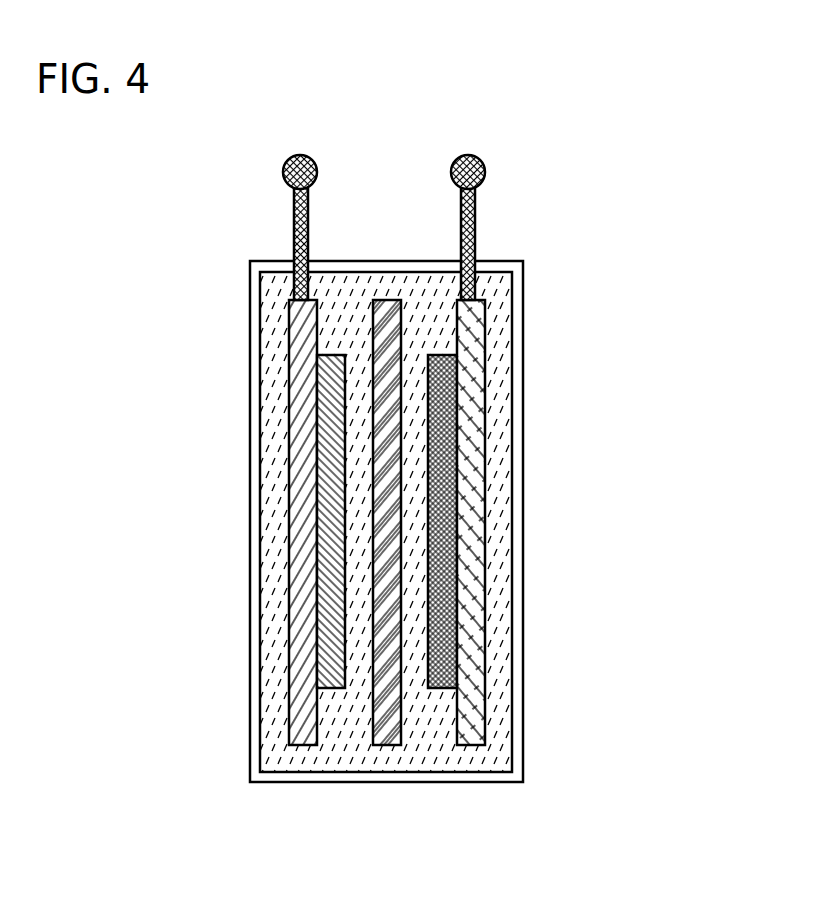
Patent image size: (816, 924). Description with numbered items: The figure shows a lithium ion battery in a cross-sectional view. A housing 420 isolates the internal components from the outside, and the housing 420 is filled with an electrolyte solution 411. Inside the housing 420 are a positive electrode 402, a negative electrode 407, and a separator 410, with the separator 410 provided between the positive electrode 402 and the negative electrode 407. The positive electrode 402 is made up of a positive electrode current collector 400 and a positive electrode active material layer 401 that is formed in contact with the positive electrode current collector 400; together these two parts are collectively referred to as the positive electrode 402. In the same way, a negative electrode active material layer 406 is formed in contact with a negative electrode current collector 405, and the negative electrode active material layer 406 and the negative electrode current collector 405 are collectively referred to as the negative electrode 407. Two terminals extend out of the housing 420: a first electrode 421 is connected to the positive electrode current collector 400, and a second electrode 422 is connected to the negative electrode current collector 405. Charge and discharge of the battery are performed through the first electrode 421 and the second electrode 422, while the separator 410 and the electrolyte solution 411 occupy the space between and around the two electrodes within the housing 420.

The positive electrode current collector 400 is at (293, 744).
The positive electrode active material layer 401 is at (325, 690).
The positive electrode 402 is at (310, 600).
The negative electrode current collector 405 is at (473, 738).
The negative electrode active material layer 406 is at (440, 690).
The negative electrode 407 is at (483, 600).
The separator 410 is at (382, 300).
The electrolyte solution 411 is at (505, 288).
The housing 420 is at (518, 340).
The first electrode 421 is at (318, 170).
The second electrode 422 is at (486, 170).